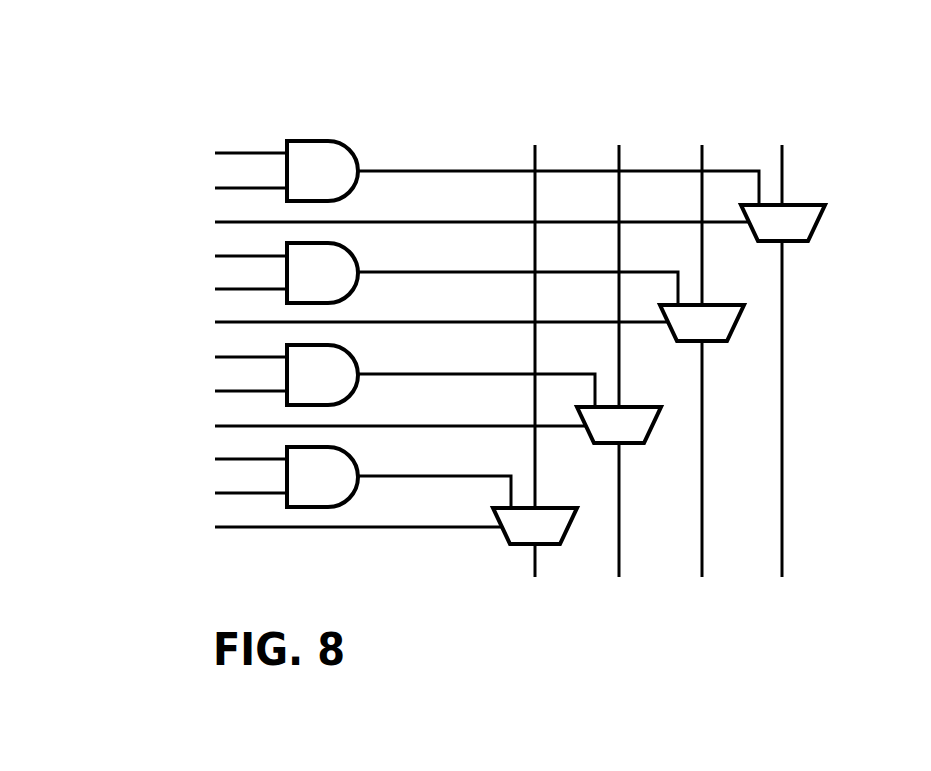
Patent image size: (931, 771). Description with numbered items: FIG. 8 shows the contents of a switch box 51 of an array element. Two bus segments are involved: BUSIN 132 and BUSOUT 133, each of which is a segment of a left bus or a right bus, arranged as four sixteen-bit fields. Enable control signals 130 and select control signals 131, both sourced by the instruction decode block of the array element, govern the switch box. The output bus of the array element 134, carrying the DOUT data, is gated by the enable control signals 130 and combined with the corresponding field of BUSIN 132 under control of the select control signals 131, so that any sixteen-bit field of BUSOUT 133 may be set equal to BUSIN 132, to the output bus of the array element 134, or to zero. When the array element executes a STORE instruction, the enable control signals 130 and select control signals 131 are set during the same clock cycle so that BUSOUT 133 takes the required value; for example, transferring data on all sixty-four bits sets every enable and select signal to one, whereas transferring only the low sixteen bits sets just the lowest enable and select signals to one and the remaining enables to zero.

The switch box 51 is at (78, 112).
The control signals EN[3:0] 130 is at (137, 189).
The control signals SEL[3:0] 131 is at (123, 223).
The BUSIN 132 is at (817, 57).
The BUSOUT 133 is at (817, 693).
The output bus of the array element 134 is at (149, 133).